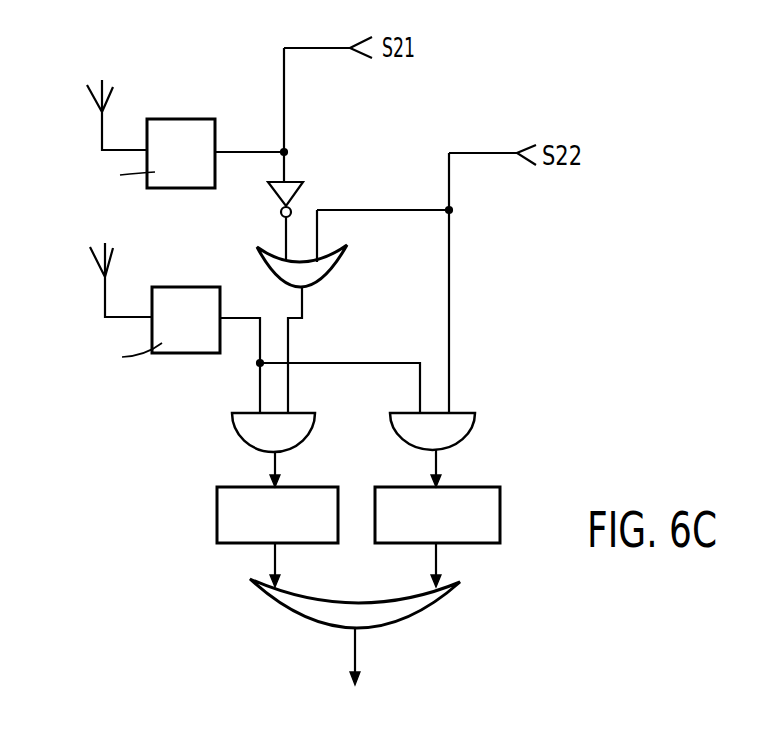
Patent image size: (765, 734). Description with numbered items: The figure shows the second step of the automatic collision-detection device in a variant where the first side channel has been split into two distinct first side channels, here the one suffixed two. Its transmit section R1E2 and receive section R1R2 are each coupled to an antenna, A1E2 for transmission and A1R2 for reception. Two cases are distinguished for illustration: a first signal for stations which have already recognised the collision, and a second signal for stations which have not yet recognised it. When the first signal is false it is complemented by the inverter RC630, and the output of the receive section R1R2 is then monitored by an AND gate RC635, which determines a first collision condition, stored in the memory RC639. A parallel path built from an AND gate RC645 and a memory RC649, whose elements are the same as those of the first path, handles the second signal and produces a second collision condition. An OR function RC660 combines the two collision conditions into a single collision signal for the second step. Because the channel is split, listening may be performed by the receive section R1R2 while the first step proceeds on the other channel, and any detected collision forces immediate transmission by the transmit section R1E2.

The transmit antenna A1E2 is at (117, 90).
The transmit section of the second first side channel R1E2 is at (187, 119).
The receive antenna A1R2 is at (116, 262).
The receive section of the second first side channel R1R2 is at (175, 287).
The inverter RC630 is at (290, 182).
The AND gate RC635 is at (232, 424).
The AND gate RC645 is at (473, 436).
The memory RC639 is at (217, 522).
The memory RC649 is at (485, 543).
The OR function RC660 is at (292, 617).